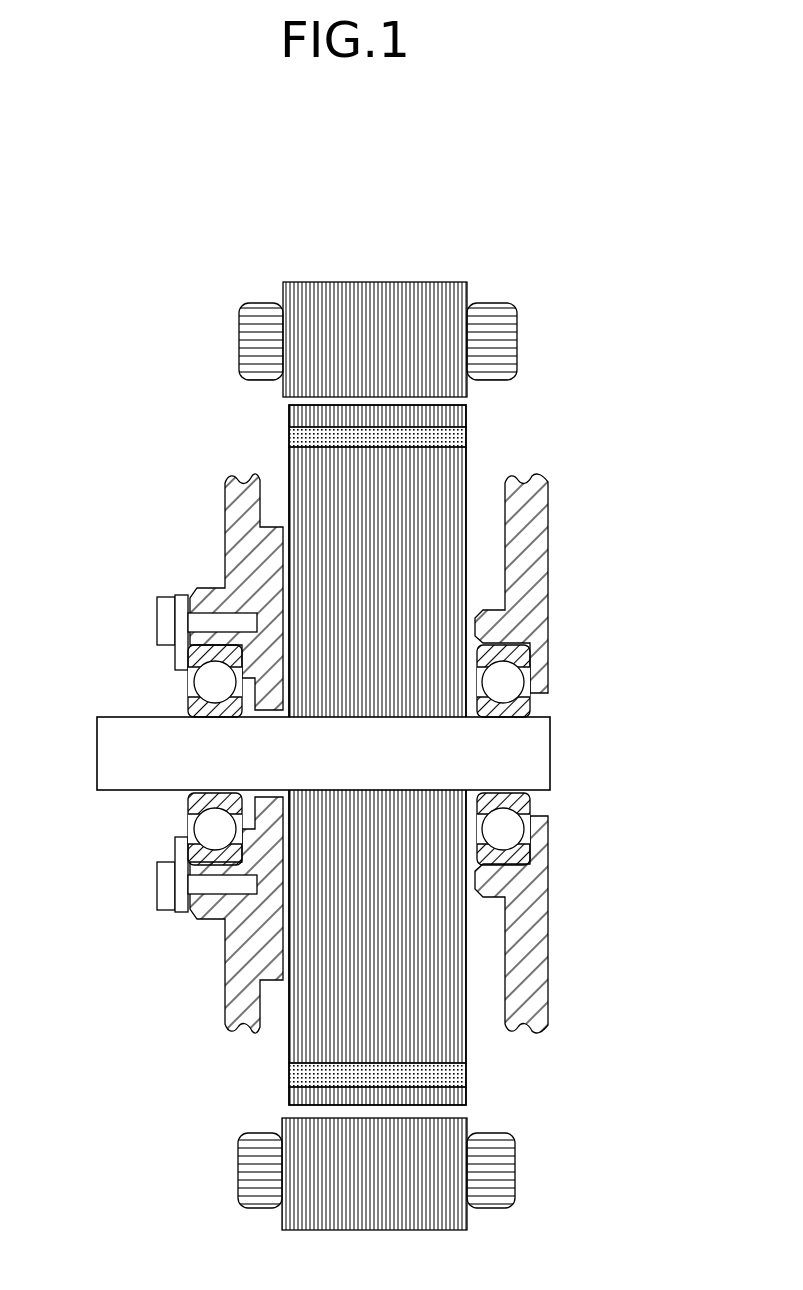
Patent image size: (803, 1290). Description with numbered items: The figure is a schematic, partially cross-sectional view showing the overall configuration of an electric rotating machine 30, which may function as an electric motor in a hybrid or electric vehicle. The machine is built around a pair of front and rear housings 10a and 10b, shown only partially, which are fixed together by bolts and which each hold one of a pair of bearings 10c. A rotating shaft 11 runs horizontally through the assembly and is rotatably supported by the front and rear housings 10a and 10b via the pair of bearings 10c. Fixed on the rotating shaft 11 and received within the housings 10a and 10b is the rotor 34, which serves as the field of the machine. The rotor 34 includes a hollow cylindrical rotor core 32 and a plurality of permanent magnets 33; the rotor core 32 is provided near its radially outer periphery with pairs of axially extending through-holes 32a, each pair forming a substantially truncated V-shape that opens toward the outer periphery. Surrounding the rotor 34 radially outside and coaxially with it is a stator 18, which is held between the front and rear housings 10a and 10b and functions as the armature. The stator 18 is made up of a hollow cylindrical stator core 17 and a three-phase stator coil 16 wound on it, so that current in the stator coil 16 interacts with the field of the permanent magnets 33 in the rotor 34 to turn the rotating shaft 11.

The front housing 10a is at (232, 963).
The rear housing 10b is at (528, 947).
The bearing 10c is at (187, 805).
The rotating shaft 11 is at (97, 740).
The stator coil 16 is at (258, 303).
The stator core 17 is at (325, 283).
The stator 18 is at (287, 220).
The electric rotating machine 30 is at (437, 236).
The rotor core 32 is at (290, 478).
The through-holes 32a is at (433, 455).
The permanent magnets 33 is at (290, 443).
The rotor 34 is at (183, 383).